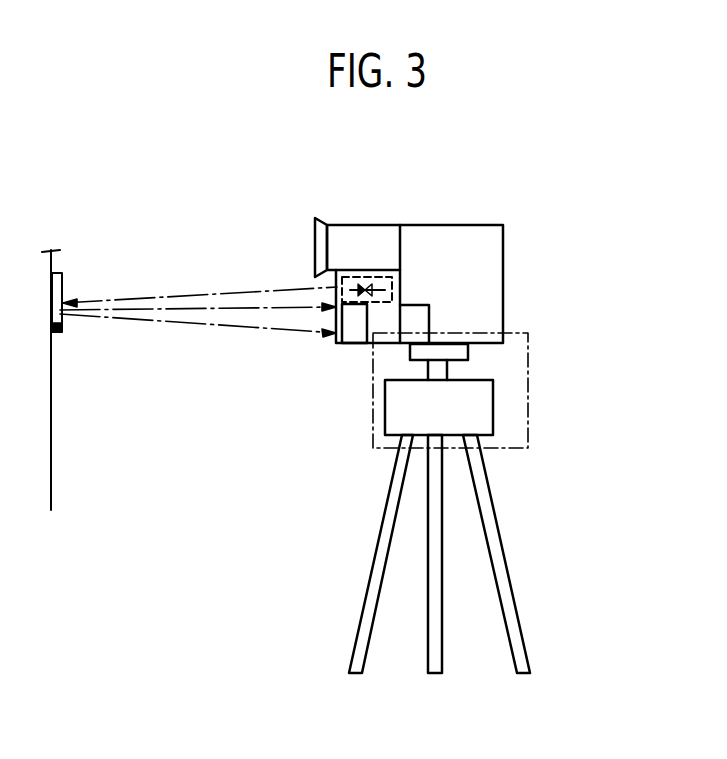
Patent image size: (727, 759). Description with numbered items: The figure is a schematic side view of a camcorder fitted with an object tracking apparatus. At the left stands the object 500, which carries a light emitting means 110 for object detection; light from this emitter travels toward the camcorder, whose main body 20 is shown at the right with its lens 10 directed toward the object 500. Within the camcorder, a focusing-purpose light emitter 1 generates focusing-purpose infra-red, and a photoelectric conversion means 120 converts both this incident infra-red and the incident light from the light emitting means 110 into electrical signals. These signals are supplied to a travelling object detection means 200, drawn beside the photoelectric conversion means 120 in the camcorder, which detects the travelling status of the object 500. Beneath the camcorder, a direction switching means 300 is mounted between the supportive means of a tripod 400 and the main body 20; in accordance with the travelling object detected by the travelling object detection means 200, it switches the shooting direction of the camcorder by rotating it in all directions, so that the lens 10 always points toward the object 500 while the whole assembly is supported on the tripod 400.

The focusing-purpose light emitter 1 is at (370, 278).
The lens 10 is at (358, 214).
The main body 20 is at (458, 225).
The light emitting means 110 is at (56, 333).
The photoelectric conversion means 120 is at (349, 344).
The travelling object detection means 200 is at (424, 313).
The direction switching means 300 is at (530, 357).
The tripod 400 is at (385, 525).
The object 500 is at (52, 460).